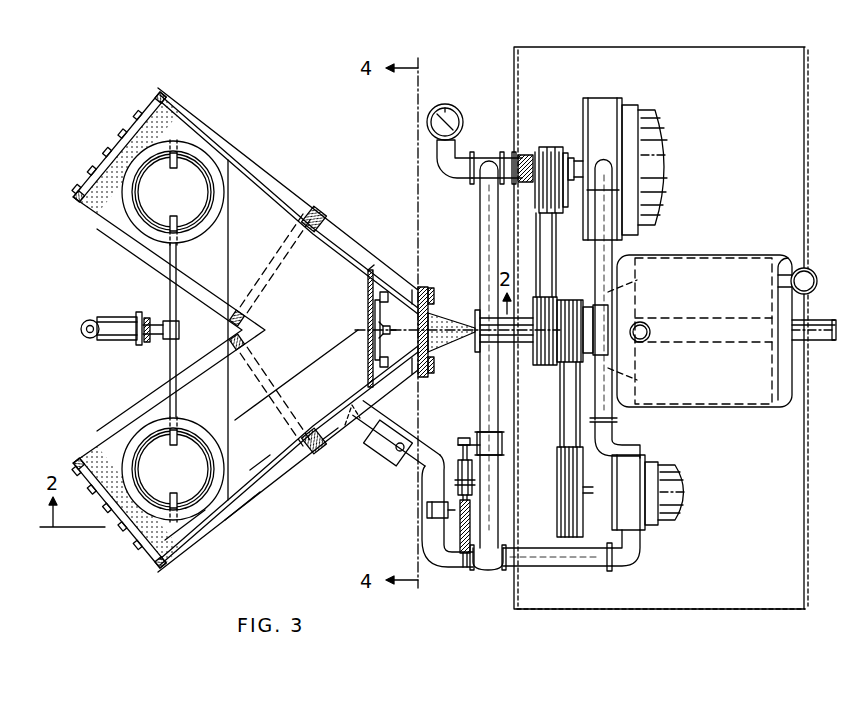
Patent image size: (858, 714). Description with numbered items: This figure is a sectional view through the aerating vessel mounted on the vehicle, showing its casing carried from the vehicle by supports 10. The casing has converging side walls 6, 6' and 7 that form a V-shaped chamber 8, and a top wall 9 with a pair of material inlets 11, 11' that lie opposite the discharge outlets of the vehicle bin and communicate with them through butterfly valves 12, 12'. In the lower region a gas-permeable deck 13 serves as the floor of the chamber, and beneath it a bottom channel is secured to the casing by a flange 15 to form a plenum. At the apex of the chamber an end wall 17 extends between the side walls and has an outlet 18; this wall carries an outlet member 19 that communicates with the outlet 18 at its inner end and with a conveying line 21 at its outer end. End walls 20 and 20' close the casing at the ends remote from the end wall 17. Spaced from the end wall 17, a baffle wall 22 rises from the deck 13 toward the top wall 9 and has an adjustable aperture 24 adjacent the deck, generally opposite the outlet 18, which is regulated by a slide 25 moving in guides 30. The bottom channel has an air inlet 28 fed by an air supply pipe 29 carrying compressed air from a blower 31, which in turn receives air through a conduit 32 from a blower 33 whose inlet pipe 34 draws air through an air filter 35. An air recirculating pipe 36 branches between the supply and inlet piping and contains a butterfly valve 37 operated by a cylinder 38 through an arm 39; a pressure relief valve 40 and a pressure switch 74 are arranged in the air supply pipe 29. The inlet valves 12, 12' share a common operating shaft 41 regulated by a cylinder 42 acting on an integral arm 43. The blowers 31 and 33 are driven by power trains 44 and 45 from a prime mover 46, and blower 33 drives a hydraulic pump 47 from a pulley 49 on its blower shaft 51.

The side wall 6 is at (264, 459).
The side wall 6' is at (257, 201).
The side wall 7 is at (240, 496).
The V-shaped chamber 8 is at (215, 330).
The top wall 9 is at (190, 525).
The support 10 is at (133, 150).
The material inlet 11 is at (148, 460).
The material inlet 11' is at (179, 172).
The butterfly valve 12 is at (118, 469).
The butterfly valve 12' is at (217, 183).
The gas-permeable deck 13 is at (258, 465).
The flange 15 is at (332, 446).
The end wall 17 is at (424, 284).
The outlet 18 is at (432, 296).
The outlet member 19 is at (452, 312).
The end wall 20 is at (117, 520).
The end wall 20' is at (117, 135).
The conveying line 21 is at (820, 342).
The baffle wall 22 is at (368, 285).
The adjustable aperture 24 is at (388, 320).
The slide 25 is at (374, 312).
The air inlet 28 is at (350, 428).
The air supply pipe 29 is at (433, 560).
The guide 30 is at (378, 283).
The blower 31 is at (650, 532).
The conduit 32 is at (595, 256).
The blower 33 is at (628, 104).
The inlet pipe 34 is at (508, 155).
The air filter 35 is at (443, 104).
The air recirculating pipe 36 is at (490, 570).
The butterfly valve 37 is at (480, 440).
The cylinder 38 is at (460, 555).
The arm 39 is at (458, 440).
The pressure relief valve 40 is at (427, 512).
The operating shaft 41 is at (170, 356).
The cylinder 42 is at (82, 326).
The arm 43 is at (170, 322).
The power train 44 is at (557, 527).
The power train 45 is at (540, 150).
The prime mover 46 is at (725, 255).
The hydraulic pump 47 is at (523, 155).
The pulley 49 is at (563, 152).
The blower shaft 51 is at (575, 160).
The pressure switch 74 is at (392, 452).